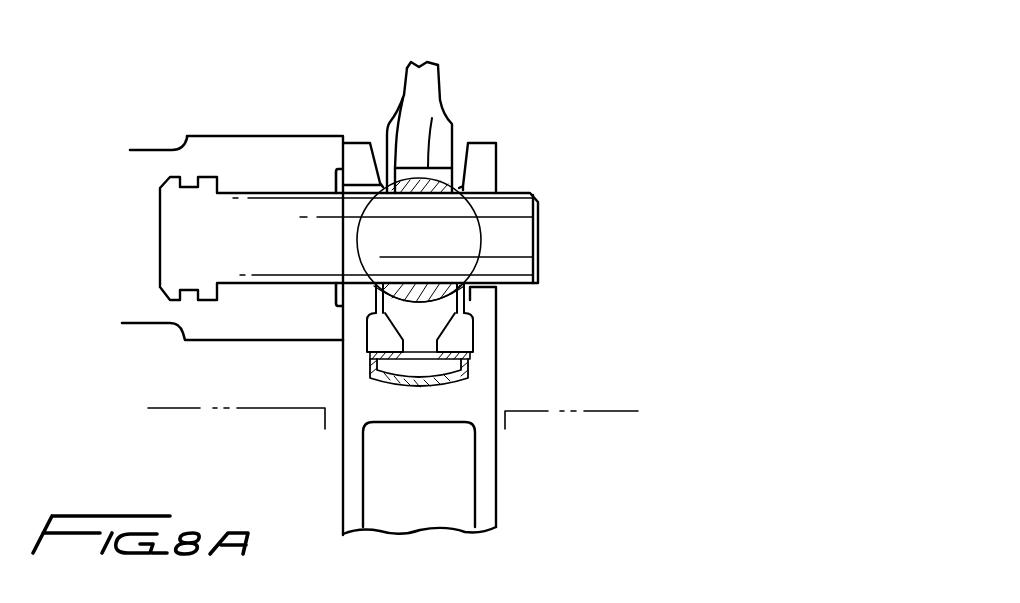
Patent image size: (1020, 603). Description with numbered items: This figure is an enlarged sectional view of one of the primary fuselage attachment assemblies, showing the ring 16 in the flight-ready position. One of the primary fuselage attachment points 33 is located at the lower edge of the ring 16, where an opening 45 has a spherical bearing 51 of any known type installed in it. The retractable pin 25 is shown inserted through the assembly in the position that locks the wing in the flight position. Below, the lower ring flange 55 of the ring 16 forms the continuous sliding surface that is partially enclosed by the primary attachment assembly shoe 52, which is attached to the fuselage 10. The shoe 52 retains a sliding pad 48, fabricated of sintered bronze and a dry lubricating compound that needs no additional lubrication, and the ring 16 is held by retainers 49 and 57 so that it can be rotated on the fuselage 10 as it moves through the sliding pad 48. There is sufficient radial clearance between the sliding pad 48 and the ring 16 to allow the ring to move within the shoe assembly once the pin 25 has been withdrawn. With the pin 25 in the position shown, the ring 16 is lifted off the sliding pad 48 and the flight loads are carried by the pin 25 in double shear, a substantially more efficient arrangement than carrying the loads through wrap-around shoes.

The fuselage 10 is at (618, 411).
The ring 16 is at (442, 82).
The retractable pin 25 is at (542, 204).
The primary fuselage attachment point 33 is at (388, 124).
The opening 45 is at (432, 118).
The sliding pad 48 is at (452, 389).
The retainer 49 is at (372, 330).
The spherical bearing 51 is at (466, 152).
The primary attachment assembly shoe 52 is at (497, 363).
The lower ring flange 55 is at (378, 389).
The retainer 57 is at (470, 326).